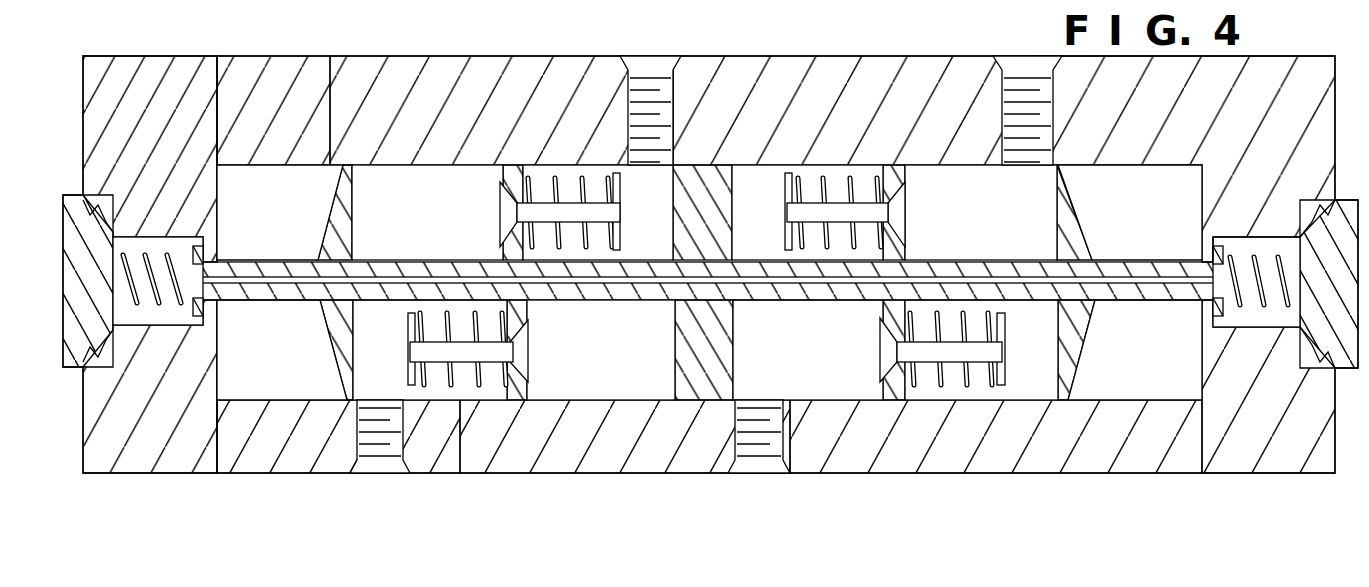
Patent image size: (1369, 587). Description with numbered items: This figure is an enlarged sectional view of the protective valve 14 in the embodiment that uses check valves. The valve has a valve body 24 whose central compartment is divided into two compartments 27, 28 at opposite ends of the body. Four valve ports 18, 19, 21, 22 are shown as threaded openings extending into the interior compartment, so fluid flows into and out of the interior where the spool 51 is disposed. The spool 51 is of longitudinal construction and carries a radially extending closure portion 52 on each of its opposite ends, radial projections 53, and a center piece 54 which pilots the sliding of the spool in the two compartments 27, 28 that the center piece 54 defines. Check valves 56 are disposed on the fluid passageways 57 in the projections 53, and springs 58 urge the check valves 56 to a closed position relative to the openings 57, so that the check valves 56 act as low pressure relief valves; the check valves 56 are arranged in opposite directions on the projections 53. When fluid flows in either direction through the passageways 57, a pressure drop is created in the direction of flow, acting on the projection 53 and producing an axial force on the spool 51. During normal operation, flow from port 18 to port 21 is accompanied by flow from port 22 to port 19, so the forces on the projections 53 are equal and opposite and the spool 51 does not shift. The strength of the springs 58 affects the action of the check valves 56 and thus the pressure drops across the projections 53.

The protective valve 14 is at (450, 72).
The valve body 24 is at (528, 78).
The valve port 22 is at (660, 62).
The valve port 21 is at (1030, 70).
The valve port 19 is at (390, 420).
The valve port 18 is at (778, 394).
The compartment 27 is at (475, 202).
The compartment 28 is at (1031, 203).
The spool 51 is at (288, 250).
The radially extending closure portion 52 is at (343, 213).
The radial projection 53 is at (522, 303).
The center piece 54 is at (723, 198).
The check valve 56 is at (507, 212).
The fluid passageway 57 is at (520, 333).
The spring 58 is at (583, 170).